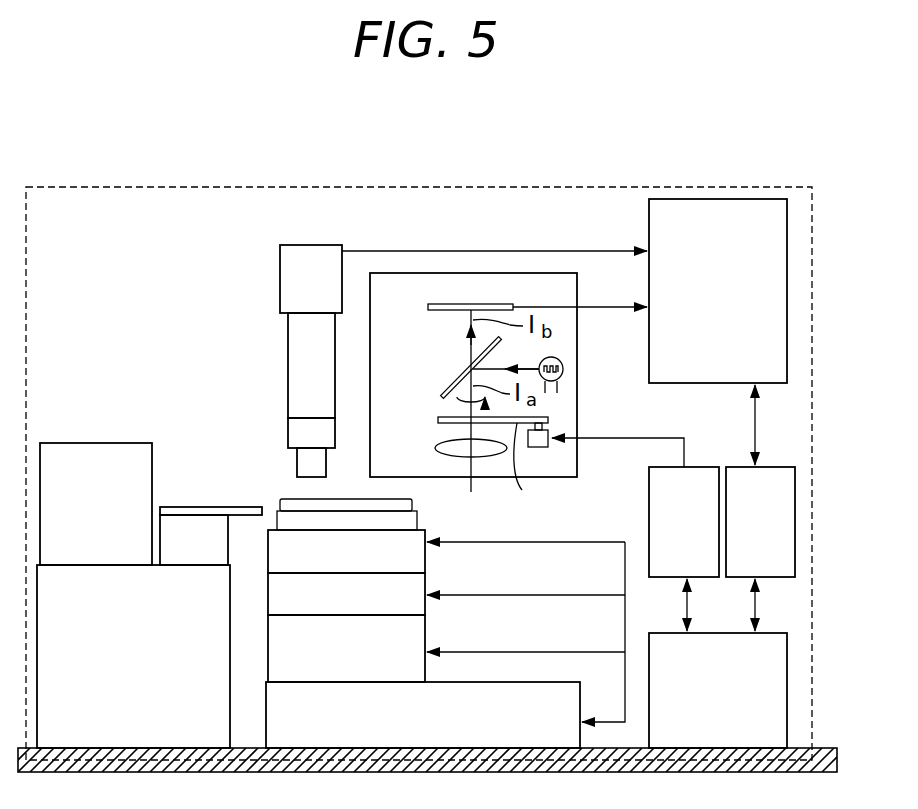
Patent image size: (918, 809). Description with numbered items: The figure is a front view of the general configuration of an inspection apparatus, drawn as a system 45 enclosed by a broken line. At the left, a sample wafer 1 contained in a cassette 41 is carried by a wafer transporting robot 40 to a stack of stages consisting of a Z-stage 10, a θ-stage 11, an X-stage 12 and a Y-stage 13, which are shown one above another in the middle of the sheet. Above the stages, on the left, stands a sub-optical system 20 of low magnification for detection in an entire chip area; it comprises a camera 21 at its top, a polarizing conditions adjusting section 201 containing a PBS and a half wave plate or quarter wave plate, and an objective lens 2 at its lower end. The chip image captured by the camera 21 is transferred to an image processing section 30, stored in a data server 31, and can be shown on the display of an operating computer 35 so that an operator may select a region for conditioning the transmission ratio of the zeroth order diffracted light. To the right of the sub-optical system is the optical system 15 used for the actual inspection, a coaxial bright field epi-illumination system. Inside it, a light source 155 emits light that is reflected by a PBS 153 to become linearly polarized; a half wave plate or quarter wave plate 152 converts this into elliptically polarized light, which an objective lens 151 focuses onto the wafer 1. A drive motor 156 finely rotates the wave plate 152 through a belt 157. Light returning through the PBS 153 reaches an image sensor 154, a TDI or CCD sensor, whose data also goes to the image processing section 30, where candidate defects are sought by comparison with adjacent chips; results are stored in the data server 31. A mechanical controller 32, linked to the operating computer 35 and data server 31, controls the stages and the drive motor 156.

The sample (wafer) 1 is at (408, 501).
The objective lens 2 is at (306, 463).
The Z-stage 10 is at (446, 551).
The θ-stage 11 is at (446, 594).
The X-stage 12 is at (446, 648).
The Y-stage 13 is at (445, 645).
The optical system for visual inspection 15 is at (549, 478).
The sub-optical system 20 is at (291, 380).
The camera 21 is at (286, 268).
The image processing section 30 is at (718, 332).
The data server 31 is at (760, 549).
The mechanical controller 32 is at (684, 549).
The operating computer 35 is at (718, 690).
The wafer transporting robot 40 is at (211, 536).
The cassette 41 is at (133, 595).
The system 45 is at (104, 188).
The objective lens 151 is at (440, 448).
The half wave plate or quarter wave plate 152 is at (444, 417).
The PBS (polarizing beam splitter) 153 is at (456, 380).
The image sensor 154 is at (449, 304).
The light source 155 is at (560, 362).
The drive motor 156 is at (549, 431).
The belt 157 is at (526, 469).
The polarizing conditions adjusting section 201 is at (299, 435).